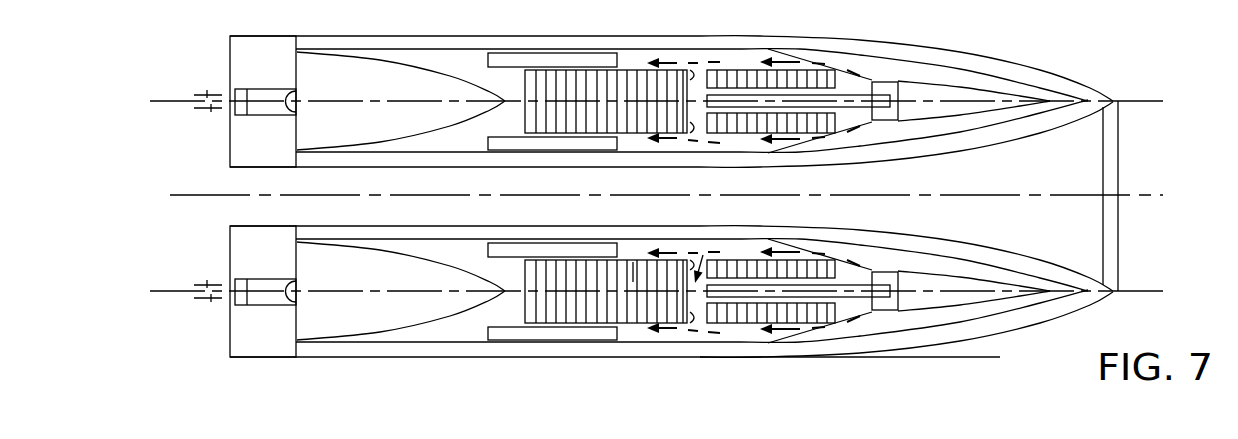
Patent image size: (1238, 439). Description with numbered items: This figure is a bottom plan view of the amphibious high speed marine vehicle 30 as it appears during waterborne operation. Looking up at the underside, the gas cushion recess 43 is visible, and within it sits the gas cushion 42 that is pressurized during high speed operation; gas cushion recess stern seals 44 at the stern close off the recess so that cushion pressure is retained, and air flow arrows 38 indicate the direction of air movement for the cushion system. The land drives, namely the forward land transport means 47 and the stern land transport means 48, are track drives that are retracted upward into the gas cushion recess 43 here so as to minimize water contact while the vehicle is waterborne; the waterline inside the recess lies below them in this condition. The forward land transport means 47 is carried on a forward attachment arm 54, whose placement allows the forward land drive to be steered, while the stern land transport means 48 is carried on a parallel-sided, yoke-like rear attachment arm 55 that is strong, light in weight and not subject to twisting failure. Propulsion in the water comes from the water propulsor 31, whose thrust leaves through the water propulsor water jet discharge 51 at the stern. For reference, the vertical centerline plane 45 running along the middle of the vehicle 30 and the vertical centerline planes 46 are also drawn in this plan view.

The amphibious high speed marine vehicle 30 is at (758, 357).
The water propulsor 31 is at (251, 108).
The air flow arrows 38 is at (1027, 25).
The gas cushion 42 is at (635, 140).
The gas cushion recess 43 is at (716, 140).
The gas cushion recess stern seals 44 is at (349, 135).
The vertical centerline plane 45 is at (953, 193).
The vertical centerline planes 46 is at (1137, 101).
The forward land transport means 47 is at (768, 290).
The stern land transport means 48 is at (633, 272).
The water propulsor water jet discharge 51 is at (216, 106).
The forward attachment arm 54 is at (848, 288).
The rear attachment arm 55 is at (513, 140).